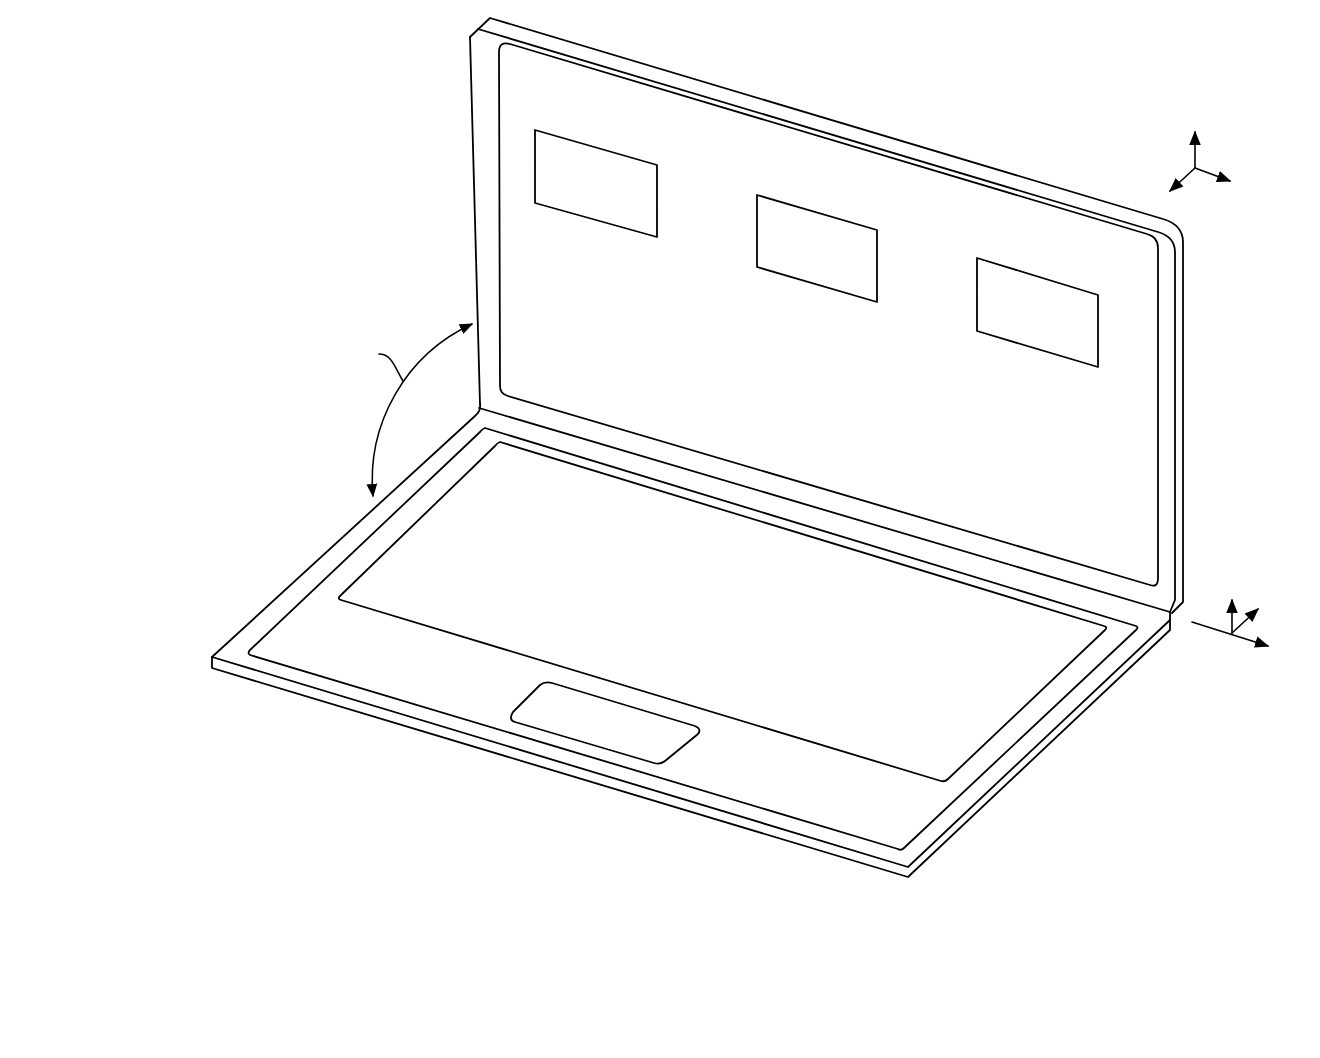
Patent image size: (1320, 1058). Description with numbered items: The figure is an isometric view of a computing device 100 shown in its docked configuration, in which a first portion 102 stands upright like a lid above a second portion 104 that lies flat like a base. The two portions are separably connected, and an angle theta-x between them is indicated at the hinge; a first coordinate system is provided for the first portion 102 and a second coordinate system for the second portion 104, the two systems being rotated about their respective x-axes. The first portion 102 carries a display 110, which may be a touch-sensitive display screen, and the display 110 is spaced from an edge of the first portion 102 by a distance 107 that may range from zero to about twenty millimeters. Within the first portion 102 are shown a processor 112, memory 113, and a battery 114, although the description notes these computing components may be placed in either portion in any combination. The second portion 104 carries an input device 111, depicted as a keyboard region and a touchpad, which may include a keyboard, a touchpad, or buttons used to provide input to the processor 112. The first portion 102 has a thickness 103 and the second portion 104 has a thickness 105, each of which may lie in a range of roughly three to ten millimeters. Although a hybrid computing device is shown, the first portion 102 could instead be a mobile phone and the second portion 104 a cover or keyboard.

The computing device 100 is at (165, 149).
The first portion 102 is at (400, 149).
The thickness 103 is at (1135, 447).
The second portion 104 is at (224, 487).
The thickness 105 is at (930, 797).
The distance 107 is at (955, 600).
The display 110 is at (799, 382).
The input device 111 is at (705, 619).
The processor 112 is at (608, 195).
The memory 113 is at (829, 254).
The battery 114 is at (1045, 320).